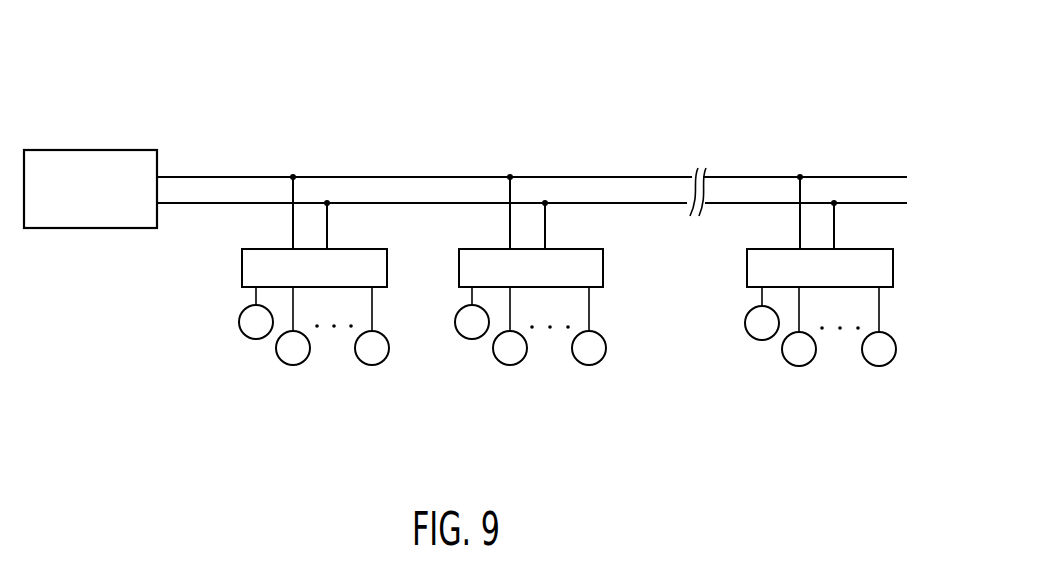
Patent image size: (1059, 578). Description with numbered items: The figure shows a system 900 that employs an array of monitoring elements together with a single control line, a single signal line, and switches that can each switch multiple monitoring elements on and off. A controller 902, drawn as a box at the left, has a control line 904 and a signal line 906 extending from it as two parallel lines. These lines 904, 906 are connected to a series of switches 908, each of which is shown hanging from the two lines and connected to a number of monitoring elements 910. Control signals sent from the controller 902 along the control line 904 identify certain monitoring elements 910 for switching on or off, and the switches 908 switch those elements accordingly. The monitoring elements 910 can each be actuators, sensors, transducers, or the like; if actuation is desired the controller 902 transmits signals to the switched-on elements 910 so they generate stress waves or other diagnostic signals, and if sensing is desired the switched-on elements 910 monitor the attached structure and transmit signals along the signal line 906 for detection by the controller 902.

The system 900 is at (647, 86).
The controller 902 is at (105, 198).
The control line 904 is at (204, 205).
The signal line 906 is at (207, 175).
The switch 908 is at (604, 274).
The monitoring element 910 is at (381, 361).